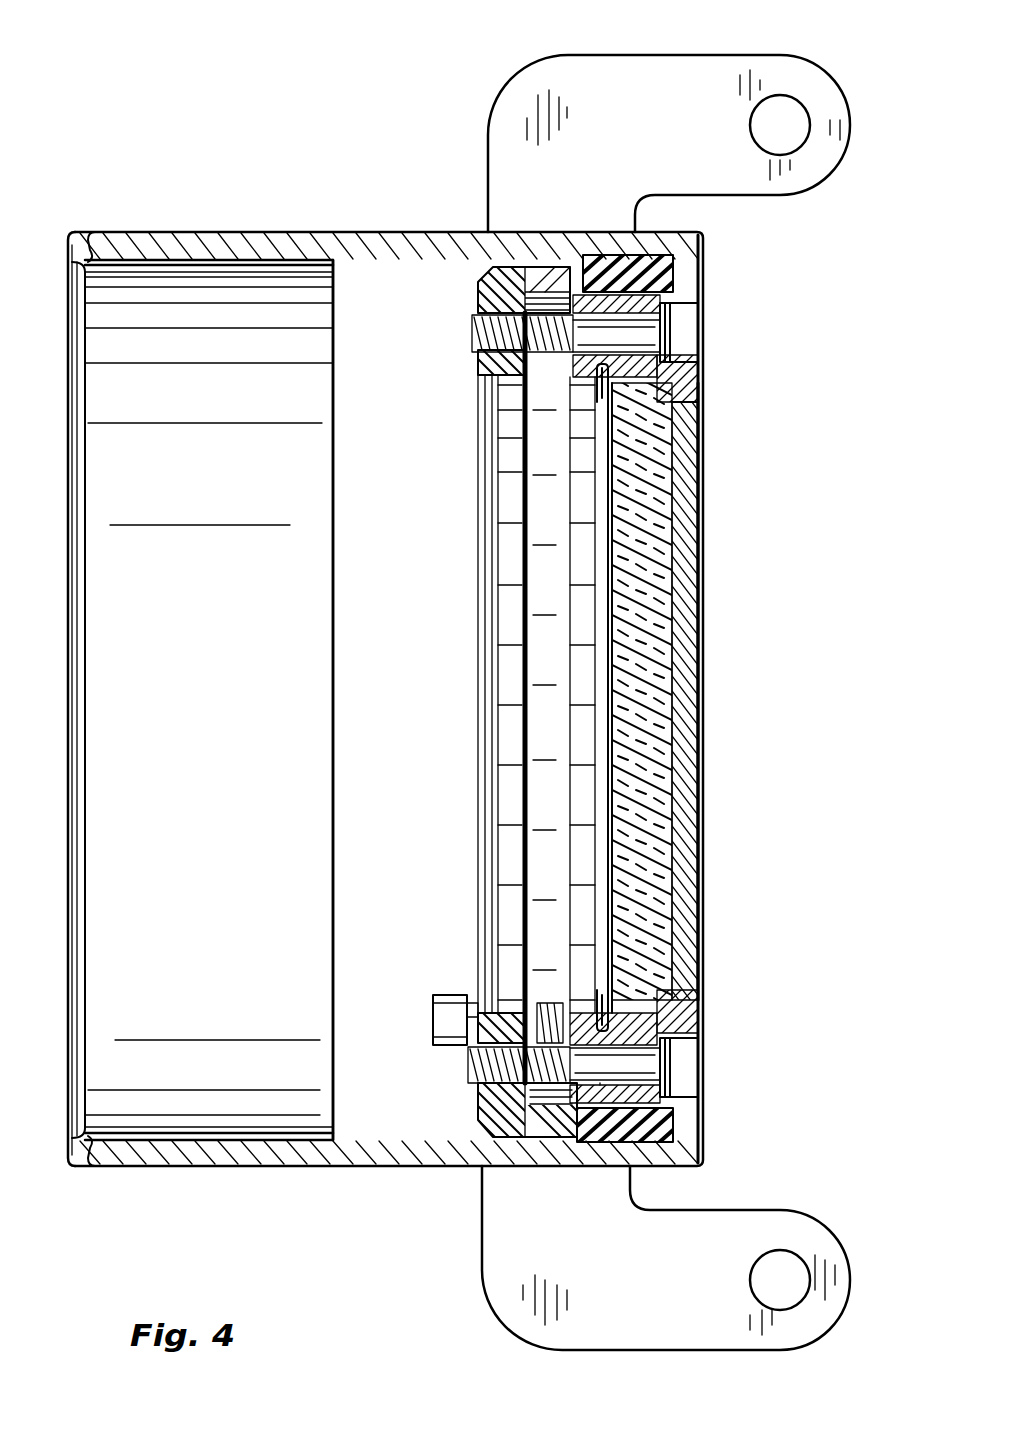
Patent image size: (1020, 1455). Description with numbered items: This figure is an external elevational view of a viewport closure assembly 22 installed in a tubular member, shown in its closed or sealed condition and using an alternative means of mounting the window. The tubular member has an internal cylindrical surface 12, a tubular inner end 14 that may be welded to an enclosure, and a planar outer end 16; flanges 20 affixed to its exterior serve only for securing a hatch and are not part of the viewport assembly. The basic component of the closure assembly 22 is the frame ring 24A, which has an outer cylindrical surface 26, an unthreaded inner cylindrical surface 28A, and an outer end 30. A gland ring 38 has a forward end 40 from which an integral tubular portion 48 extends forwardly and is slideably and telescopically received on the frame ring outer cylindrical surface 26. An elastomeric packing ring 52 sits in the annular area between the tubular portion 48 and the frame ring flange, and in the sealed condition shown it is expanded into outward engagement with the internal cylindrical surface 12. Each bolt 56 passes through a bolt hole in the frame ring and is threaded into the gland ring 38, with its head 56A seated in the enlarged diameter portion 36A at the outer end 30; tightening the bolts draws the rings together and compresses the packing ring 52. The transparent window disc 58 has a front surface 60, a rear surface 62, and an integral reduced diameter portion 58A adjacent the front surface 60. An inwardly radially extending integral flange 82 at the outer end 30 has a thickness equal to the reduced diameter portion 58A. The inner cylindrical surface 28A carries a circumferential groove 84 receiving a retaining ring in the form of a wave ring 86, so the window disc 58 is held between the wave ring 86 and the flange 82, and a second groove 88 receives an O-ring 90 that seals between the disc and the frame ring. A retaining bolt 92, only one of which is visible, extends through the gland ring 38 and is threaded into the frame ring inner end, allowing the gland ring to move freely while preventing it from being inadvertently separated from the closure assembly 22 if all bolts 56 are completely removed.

The internal cylindrical surface 12 is at (412, 262).
The tubular inner end 14 is at (65, 232).
The outer end 16 is at (703, 236).
The flanges 20 is at (590, 75).
The closure assembly 22 is at (671, 702).
The frame ring 24A is at (640, 350).
The outer cylindrical surface 26 is at (700, 272).
The inner cylindrical surface 28A is at (700, 392).
The outer end 30 is at (700, 1130).
The enlarged diameter portion 36A is at (697, 1045).
The gland ring 38 is at (478, 1090).
The forward end 40 is at (482, 372).
The tubular portion 48 is at (535, 268).
The elastomeric packing ring 52 is at (606, 262).
The bolt 56 is at (530, 380).
The head 56A is at (700, 1085).
The transparent window disc 58 is at (660, 682).
The reduced diameter portion 58A is at (695, 613).
The front surface 60 is at (700, 556).
The rear surface 62 is at (605, 740).
The integral flange 82 is at (700, 422).
The circumferential groove 84 is at (582, 400).
The wave ring 86 is at (700, 460).
The second groove 88 is at (635, 1005).
The O-ring 90 is at (640, 1025).
The retaining bolts 92 is at (440, 1022).